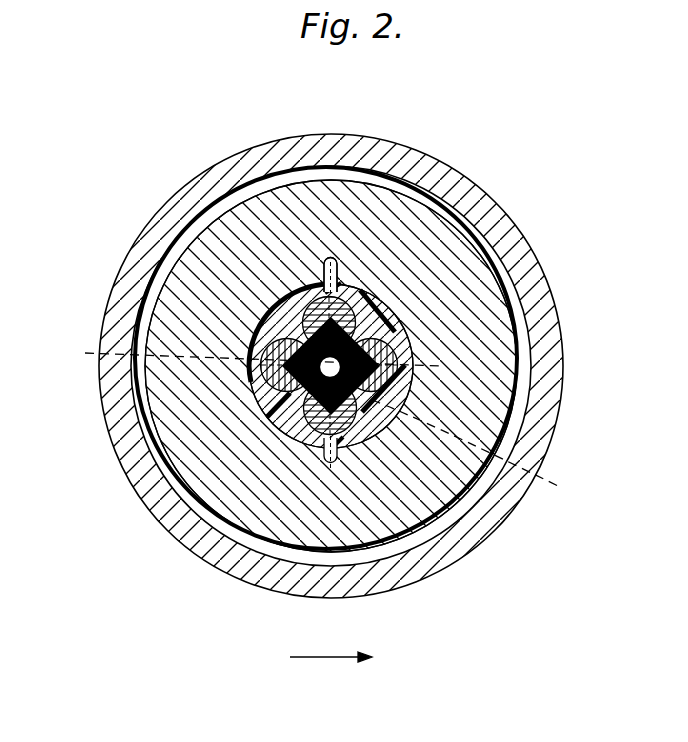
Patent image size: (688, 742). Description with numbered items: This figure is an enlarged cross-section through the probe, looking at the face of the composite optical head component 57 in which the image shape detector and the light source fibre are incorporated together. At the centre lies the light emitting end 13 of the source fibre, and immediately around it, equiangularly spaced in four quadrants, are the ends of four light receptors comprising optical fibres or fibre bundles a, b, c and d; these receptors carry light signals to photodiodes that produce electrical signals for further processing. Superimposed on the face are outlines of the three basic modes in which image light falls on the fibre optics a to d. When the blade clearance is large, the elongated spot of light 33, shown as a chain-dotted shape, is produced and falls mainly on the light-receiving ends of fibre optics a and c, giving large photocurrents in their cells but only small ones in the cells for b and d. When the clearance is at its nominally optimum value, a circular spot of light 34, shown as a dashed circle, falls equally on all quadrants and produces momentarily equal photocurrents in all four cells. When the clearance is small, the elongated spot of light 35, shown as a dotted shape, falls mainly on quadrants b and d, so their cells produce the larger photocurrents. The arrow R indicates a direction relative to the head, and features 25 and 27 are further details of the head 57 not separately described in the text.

The light emitting end 13 is at (468, 182).
The elongated spot of light 33 is at (362, 290).
The composite optical head component 57 is at (486, 298).
The upper key slot 25 is at (320, 295).
The central bore with strands 27 is at (330, 359).
The circular spot of light 34 is at (474, 453).
The elongated spot of light 35 is at (244, 357).
The light receptor fibre optic a is at (307, 300).
The light receptor fibre optic b is at (385, 345).
The light receptor fibre optic c is at (245, 527).
The light receptor fibre optic d is at (272, 388).
The direction of rotation R is at (331, 643).